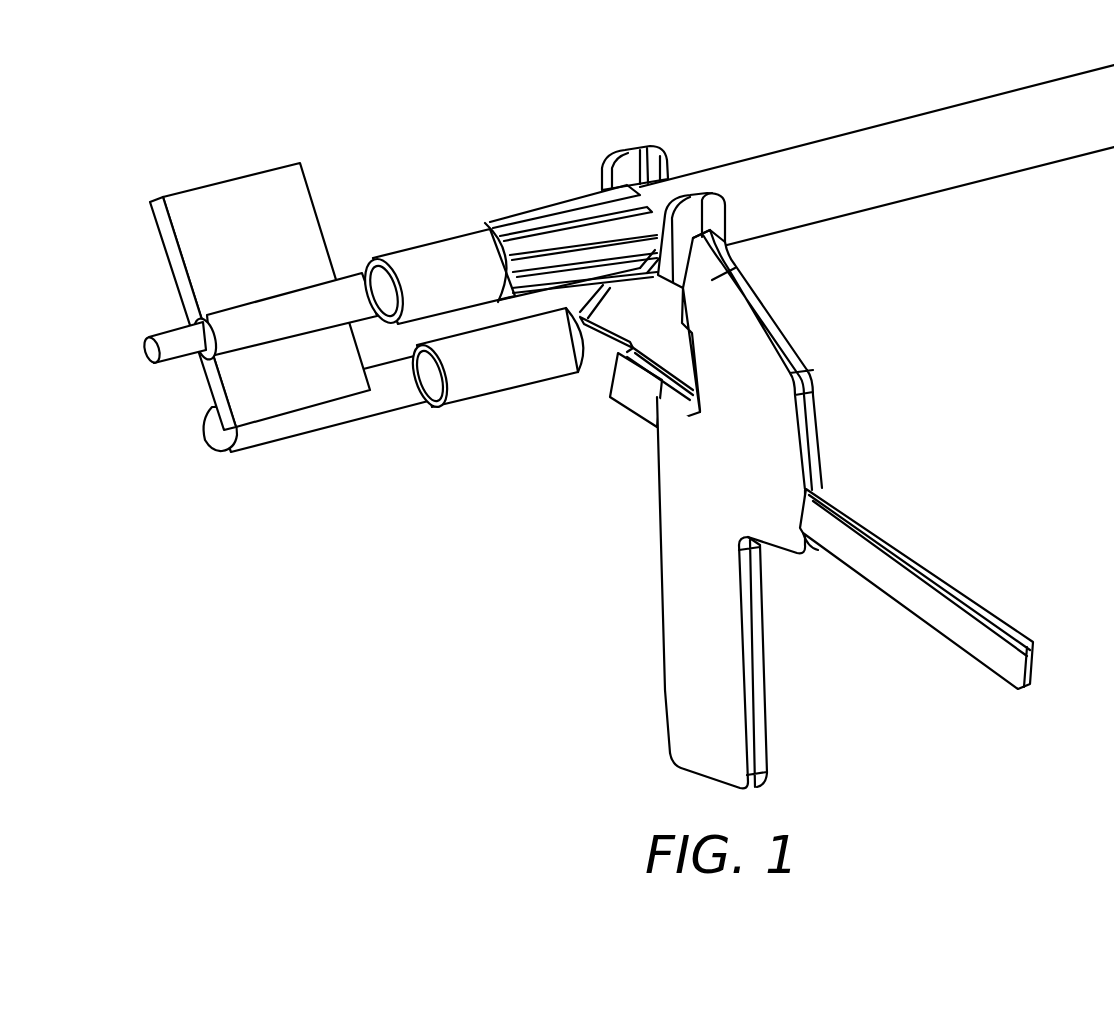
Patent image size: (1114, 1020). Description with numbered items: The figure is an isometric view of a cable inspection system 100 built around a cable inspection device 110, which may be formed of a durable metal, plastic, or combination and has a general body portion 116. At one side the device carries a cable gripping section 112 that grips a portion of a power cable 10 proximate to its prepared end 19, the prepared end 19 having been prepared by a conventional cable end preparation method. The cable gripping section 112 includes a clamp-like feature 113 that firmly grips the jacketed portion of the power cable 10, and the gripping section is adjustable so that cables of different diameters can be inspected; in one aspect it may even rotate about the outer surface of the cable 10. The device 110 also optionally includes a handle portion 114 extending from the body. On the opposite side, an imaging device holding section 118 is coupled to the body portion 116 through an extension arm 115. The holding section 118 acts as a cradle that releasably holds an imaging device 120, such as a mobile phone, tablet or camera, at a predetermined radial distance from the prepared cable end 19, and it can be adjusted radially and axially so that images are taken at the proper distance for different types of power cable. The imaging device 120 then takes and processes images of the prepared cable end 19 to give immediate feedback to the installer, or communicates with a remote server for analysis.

The cable inspection system 100 is at (460, 113).
The power cable 10 is at (792, 133).
The clamp-like feature 113 is at (665, 151).
The cable gripping section 112 is at (750, 255).
The cable inspection device 110 is at (830, 438).
The handle portion 114 is at (922, 562).
The extension arm 115 is at (503, 388).
The body portion 116 is at (660, 567).
The imaging device holding section 118 is at (245, 451).
The prepared end 19 is at (345, 262).
The imaging device 120 is at (238, 170).